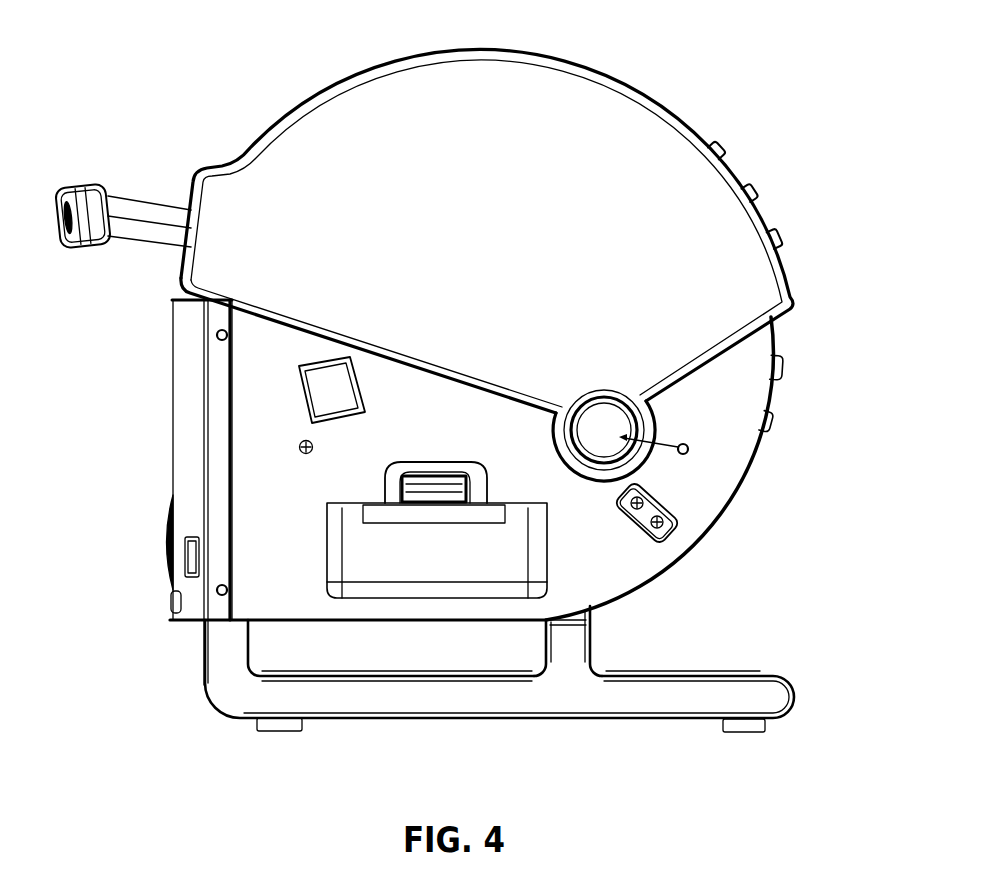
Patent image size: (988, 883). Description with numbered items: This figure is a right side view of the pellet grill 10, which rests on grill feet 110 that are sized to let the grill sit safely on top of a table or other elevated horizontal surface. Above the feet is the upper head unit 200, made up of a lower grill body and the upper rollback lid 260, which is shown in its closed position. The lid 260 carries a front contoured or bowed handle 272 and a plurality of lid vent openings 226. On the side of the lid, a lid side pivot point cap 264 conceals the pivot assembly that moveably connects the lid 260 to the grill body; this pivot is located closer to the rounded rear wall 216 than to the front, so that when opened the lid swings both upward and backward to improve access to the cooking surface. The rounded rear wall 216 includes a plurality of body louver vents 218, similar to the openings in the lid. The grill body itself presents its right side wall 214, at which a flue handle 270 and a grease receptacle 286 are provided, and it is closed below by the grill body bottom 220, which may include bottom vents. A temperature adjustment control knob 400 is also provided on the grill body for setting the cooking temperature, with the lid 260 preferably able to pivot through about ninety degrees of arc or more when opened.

The pellet grill 10 is at (692, 93).
The upper rollback lid 260 is at (512, 59).
The front contoured or bowed handle 272 is at (74, 186).
The lid vent openings 226 is at (786, 232).
The upper head unit 200 is at (792, 324).
The rounded rear wall 216 is at (780, 389).
The body louver vents 218 is at (778, 425).
The lid side pivot point caps 264 is at (692, 452).
The flue handle 270 is at (299, 403).
The temperature adjustment control knob 400 is at (160, 547).
The grease receptacle 286 is at (454, 576).
The grill body bottom 220 is at (380, 621).
The grill feet 110 is at (762, 697).
The right side wall 214 is at (607, 777).